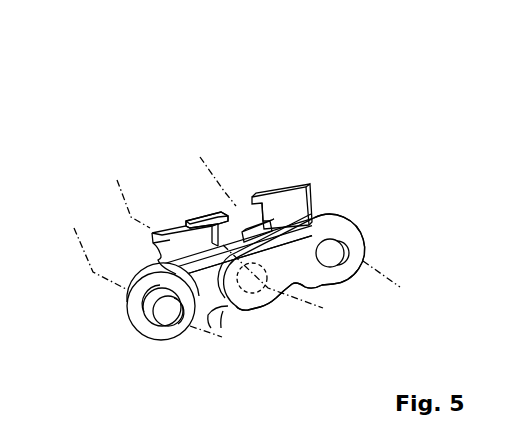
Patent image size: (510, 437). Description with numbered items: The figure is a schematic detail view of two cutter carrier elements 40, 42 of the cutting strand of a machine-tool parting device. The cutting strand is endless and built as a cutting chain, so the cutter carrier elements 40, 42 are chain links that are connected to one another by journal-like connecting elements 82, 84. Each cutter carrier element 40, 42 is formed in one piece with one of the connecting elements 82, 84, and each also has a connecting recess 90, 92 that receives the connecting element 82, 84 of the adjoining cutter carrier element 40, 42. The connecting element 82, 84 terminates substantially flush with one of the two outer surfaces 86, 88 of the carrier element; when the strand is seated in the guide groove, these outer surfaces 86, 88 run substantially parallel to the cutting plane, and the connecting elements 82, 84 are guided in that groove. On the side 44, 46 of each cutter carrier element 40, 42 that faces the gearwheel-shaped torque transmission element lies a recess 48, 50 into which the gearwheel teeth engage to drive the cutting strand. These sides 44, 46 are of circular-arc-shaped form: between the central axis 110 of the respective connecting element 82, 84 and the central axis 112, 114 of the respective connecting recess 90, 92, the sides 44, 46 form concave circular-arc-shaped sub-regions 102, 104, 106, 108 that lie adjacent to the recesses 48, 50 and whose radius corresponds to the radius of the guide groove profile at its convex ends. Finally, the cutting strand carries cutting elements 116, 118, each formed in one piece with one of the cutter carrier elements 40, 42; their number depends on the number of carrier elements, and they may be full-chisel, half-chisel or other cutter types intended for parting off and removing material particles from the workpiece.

The cutter carrier element 40 is at (146, 290).
The cutter carrier element 42 is at (335, 229).
The side 44 is at (183, 338).
The side 46 is at (340, 289).
The recess 48 is at (220, 308).
The recess 50 is at (328, 296).
The connecting element 82 is at (170, 314).
The connecting element 84 is at (210, 225).
The outer surface 86 is at (286, 256).
The outer surface 88 is at (124, 305).
The connecting recess 90 is at (268, 289).
The connecting recess 92 is at (332, 252).
The circular-arc-shaped sub-region 102 is at (193, 341).
The circular-arc-shaped sub-region 104 is at (241, 326).
The circular-arc-shaped sub-region 106 is at (286, 304).
The circular-arc-shaped sub-region 108 is at (338, 305).
The central axis 110 is at (94, 251).
The central axis 112 is at (126, 193).
The central axis 114 is at (295, 238).
The cutting element 116 is at (170, 227).
The cutting element 118 is at (263, 196).